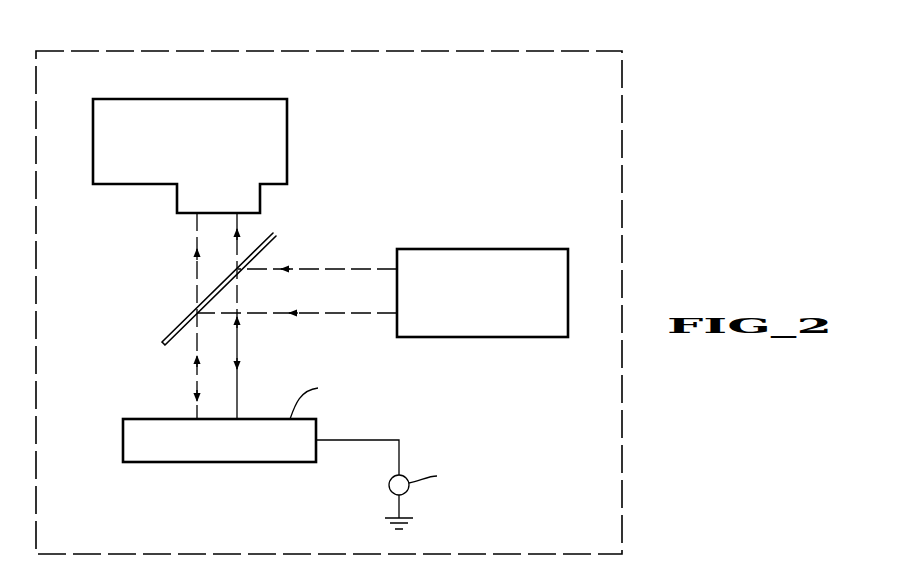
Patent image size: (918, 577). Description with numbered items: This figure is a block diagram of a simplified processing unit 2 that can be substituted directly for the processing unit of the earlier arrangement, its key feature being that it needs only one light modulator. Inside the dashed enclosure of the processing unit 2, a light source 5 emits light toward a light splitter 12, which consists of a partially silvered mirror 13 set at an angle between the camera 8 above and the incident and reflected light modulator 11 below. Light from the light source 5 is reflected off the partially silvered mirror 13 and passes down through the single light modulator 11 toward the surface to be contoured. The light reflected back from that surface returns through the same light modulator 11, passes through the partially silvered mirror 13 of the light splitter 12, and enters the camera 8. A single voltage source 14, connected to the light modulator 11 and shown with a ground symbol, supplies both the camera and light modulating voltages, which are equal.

The processing unit 2 is at (311, 50).
The camera 8 is at (287, 146).
The light source 5 is at (460, 249).
The light splitter 12 is at (283, 244).
The partially silvered mirror 13 is at (172, 336).
The incident and reflected light modulator 11 is at (123, 438).
The voltage source 14 is at (389, 485).